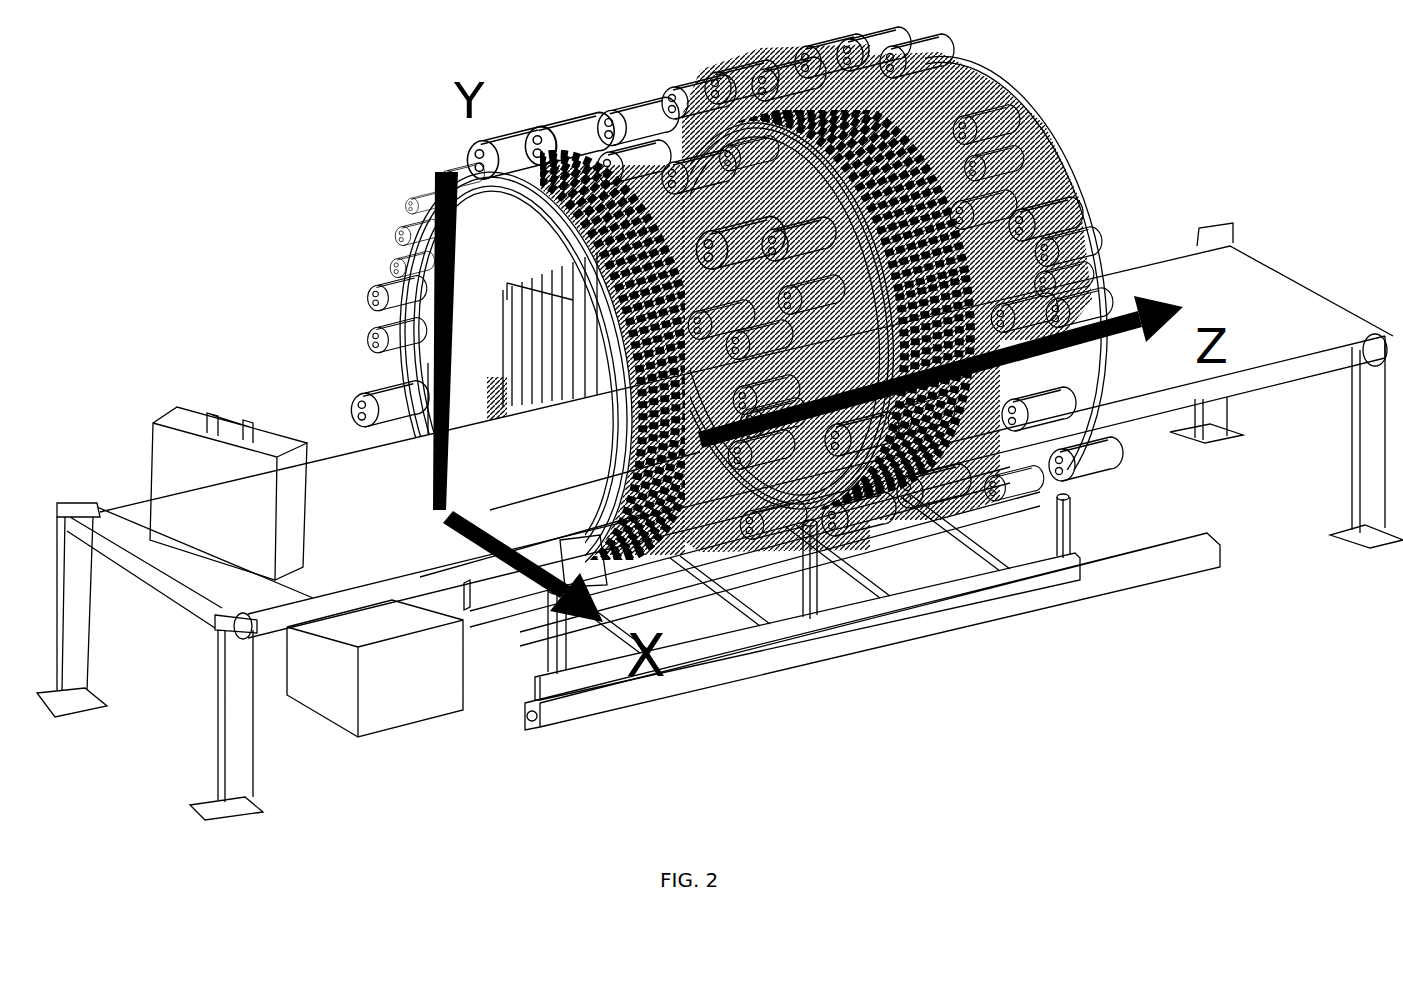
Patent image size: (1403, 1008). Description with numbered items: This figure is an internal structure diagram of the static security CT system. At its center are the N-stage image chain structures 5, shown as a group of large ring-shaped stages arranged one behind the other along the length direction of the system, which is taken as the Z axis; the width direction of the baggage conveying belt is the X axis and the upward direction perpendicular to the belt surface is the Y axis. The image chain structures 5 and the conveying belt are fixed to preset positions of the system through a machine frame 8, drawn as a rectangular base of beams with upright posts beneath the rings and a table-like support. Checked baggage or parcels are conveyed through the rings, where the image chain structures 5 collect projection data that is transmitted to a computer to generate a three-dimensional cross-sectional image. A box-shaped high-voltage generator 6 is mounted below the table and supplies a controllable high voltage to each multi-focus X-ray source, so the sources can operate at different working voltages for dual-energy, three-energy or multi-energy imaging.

The N-stage image chain structure 5 is at (897, 613).
The high-voltage generator 6 is at (385, 700).
The machine frame 8 is at (620, 677).